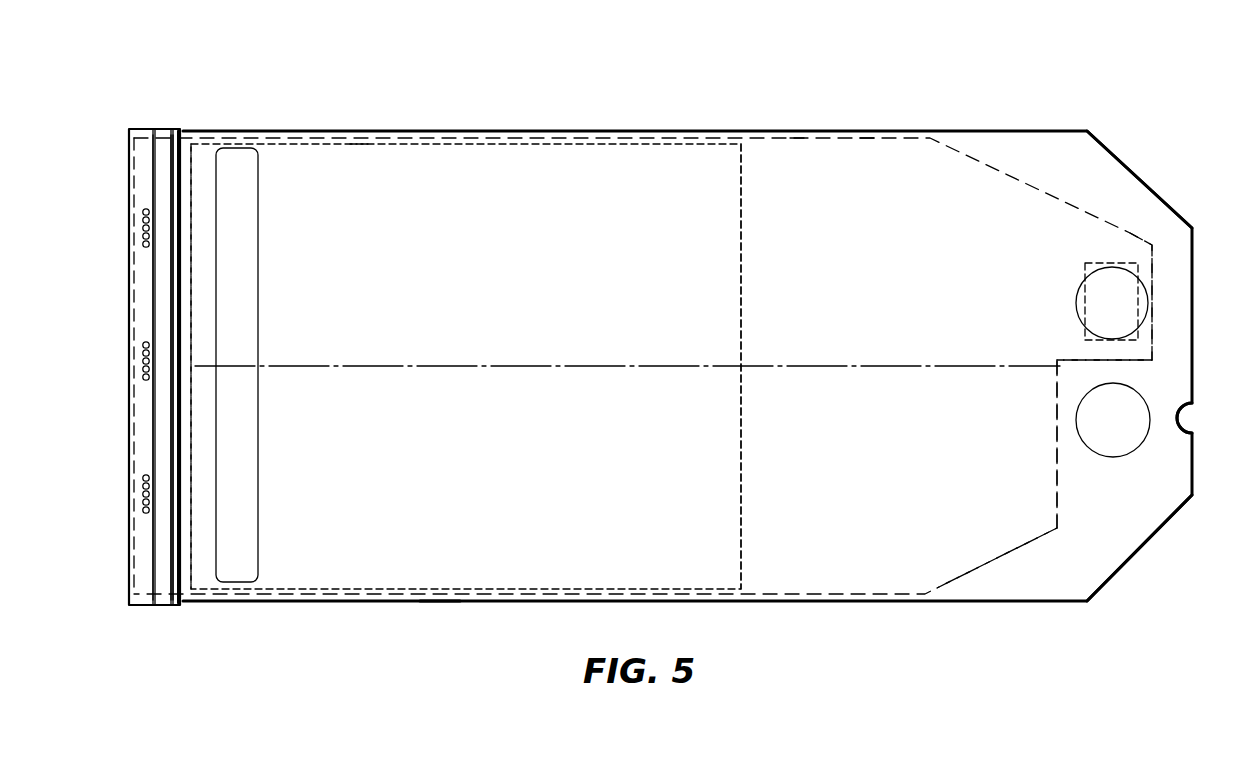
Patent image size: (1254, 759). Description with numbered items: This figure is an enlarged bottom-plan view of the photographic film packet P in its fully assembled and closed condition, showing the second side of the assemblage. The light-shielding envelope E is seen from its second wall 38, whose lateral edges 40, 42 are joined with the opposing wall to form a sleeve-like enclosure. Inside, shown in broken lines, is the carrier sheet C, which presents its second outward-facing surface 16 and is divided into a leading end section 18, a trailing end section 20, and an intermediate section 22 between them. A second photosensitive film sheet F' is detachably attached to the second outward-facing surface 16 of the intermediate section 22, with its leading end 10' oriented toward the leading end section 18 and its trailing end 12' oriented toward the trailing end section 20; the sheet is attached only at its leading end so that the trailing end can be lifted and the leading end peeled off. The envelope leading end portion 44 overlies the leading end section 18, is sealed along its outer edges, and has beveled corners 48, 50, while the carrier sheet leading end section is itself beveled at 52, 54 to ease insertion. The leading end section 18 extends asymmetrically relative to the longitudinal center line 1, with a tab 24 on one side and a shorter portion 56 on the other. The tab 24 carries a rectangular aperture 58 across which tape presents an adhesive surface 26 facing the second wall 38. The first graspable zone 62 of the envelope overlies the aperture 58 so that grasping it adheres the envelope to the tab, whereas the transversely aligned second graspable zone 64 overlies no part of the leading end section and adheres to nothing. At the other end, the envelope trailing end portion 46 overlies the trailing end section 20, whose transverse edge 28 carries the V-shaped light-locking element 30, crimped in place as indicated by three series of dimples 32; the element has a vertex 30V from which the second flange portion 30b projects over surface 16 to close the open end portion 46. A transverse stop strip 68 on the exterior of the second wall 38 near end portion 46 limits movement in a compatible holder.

The film packet P is at (492, 95).
The trailing end section 20 is at (143, 130).
The trailing end portion 46 is at (188, 130).
The second photosensitive film sheet F' is at (345, 127).
The intermediate section 22 is at (437, 140).
The lateral edge 40 is at (548, 130).
The carrier sheet C is at (605, 137).
The light-shielding envelope E is at (667, 130).
The second outward-facing surface 16 is at (797, 160).
The leading end section 18 is at (862, 170).
The leading end portion 44 is at (972, 131).
The bevel 52 is at (1013, 172).
The beveled corner 48 is at (1140, 175).
The rectangular aperture 58 is at (1133, 262).
The first graspable zone 62 is at (1077, 300).
The adhesive surface 26 is at (1138, 338).
The tab 24 is at (1125, 364).
The second graspable zone 64 is at (1138, 428).
The shorter portion 56 is at (1012, 518).
The bevel 54 is at (1022, 545).
The beveled corner 50 is at (1167, 525).
The lateral edge 42 is at (442, 604).
The leading end 10' is at (778, 366).
The longitudinal center line 1 is at (800, 362).
The second wall 38 is at (511, 321).
The stop strip 68 is at (251, 328).
The trailing end 12' is at (224, 366).
The dimples 32 is at (142, 246).
The transverse edge 28 is at (132, 275).
The light-locking element 30 is at (130, 320).
The vertex 30V is at (130, 364).
The second flange portion 30b is at (164, 430).
The indicia B is at (716, 206).
The indicia A is at (712, 527).